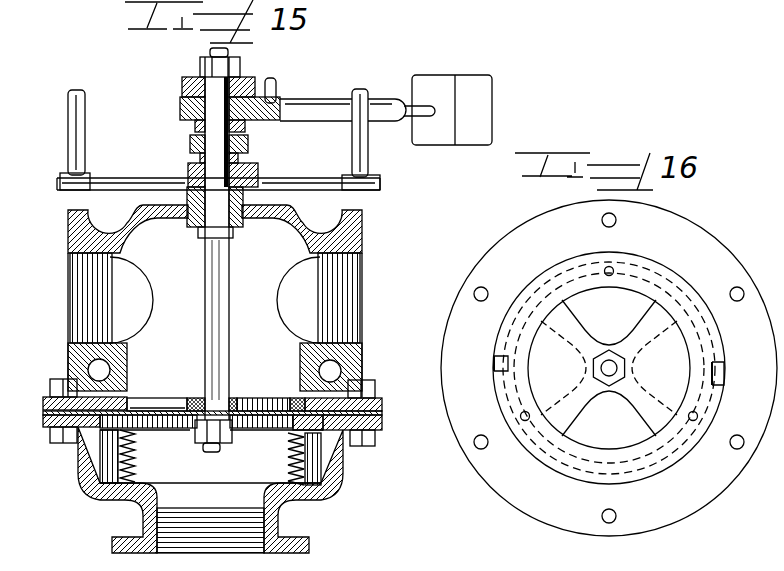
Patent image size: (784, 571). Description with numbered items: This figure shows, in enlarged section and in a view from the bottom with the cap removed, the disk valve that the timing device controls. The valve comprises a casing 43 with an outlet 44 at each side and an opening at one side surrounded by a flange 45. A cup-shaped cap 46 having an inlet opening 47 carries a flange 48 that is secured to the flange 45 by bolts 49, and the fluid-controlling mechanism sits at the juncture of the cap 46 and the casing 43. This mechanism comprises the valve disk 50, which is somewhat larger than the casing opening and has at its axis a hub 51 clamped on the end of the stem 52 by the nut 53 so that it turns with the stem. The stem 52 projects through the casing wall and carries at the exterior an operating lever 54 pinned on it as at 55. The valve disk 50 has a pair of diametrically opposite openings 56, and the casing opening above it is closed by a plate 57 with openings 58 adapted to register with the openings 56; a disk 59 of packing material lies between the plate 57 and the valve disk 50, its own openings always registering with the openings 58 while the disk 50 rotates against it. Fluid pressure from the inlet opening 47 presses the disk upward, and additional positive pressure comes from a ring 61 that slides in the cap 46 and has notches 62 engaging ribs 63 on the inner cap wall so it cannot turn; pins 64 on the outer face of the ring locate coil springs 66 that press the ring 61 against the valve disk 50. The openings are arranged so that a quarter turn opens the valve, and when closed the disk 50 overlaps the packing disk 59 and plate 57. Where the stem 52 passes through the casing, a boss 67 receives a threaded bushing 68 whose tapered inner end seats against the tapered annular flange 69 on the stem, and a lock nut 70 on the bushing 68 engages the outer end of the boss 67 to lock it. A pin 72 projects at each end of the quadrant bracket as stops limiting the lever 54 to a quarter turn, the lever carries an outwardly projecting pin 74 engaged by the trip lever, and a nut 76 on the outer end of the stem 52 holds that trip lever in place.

In FIG. 15, the casing 43 is at (68, 231).
In FIG. 15, the outlet 44 is at (85, 308).
In FIG. 15, the flange 45 is at (68, 383).
In FIG. 15, the cup-shaped cap 46 is at (78, 486).
In FIG. 15, the inlet opening 47 is at (264, 538).
In FIG. 15, the flange 48 is at (45, 427).
In FIG. 15, the bolts 49 is at (375, 388).
In FIG. 15, the valve disk 50 is at (170, 410).
In FIG. 15, the hub 51 is at (232, 396).
In FIG. 15, the stem 52 is at (219, 306).
In FIG. 15, the nut 53 is at (197, 438).
In FIG. 15, the operating lever 54 is at (303, 103).
In FIG. 15, the pin 55 is at (180, 112).
In FIG. 16, the openings 56 is at (588, 330).
In FIG. 15, the plate 57 is at (272, 404).
In FIG. 16, the openings 58 is at (612, 368).
In FIG. 15, the disk of packing material 59 is at (140, 407).
In FIG. 15, the ring 61 is at (283, 430).
In FIG. 16, the notches 62 is at (497, 360).
In FIG. 16, the ribs 63 is at (496, 366).
In FIG. 16, the pins 64 is at (614, 274).
In FIG. 15, the coil springs 66 is at (135, 463).
In FIG. 15, the boss 67 is at (258, 178).
In FIG. 15, the bushing 68 is at (190, 147).
In FIG. 15, the annular flange 69 is at (200, 235).
In FIG. 15, the lock nut 70 is at (246, 160).
In FIG. 15, the pin 72 is at (68, 107).
In FIG. 15, the pin 74 is at (271, 78).
In FIG. 15, the nut 76 is at (200, 63).